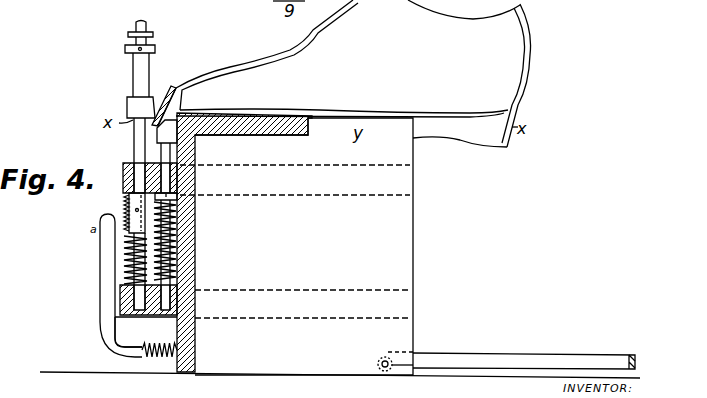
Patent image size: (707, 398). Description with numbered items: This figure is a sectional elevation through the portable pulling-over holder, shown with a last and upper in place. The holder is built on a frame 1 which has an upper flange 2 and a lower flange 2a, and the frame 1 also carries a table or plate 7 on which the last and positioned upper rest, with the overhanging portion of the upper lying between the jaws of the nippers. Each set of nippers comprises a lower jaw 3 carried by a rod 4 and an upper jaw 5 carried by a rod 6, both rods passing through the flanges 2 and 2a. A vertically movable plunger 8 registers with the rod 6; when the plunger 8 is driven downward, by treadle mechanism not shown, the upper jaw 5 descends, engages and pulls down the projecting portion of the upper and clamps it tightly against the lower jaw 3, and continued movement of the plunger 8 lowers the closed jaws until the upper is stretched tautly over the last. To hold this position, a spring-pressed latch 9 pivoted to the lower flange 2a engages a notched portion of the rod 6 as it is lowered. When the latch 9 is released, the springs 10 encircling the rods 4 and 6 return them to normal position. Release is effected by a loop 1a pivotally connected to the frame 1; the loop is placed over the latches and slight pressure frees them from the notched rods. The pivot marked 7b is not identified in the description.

The frame 1 is at (304, 246).
The loop 1a is at (552, 361).
The flange 2 is at (408, 183).
The lower flange 2a is at (402, 305).
The lower jaw 3 is at (167, 131).
The rod 4 is at (168, 173).
The upper jaw 5 is at (170, 95).
The rod 6 is at (134, 150).
The table or plate 7 is at (233, 133).
The pivot pin 7b is at (377, 378).
The plunger 8 is at (142, 71).
The spring-pressed latch 9 is at (100, 273).
The spring 10 is at (125, 247).